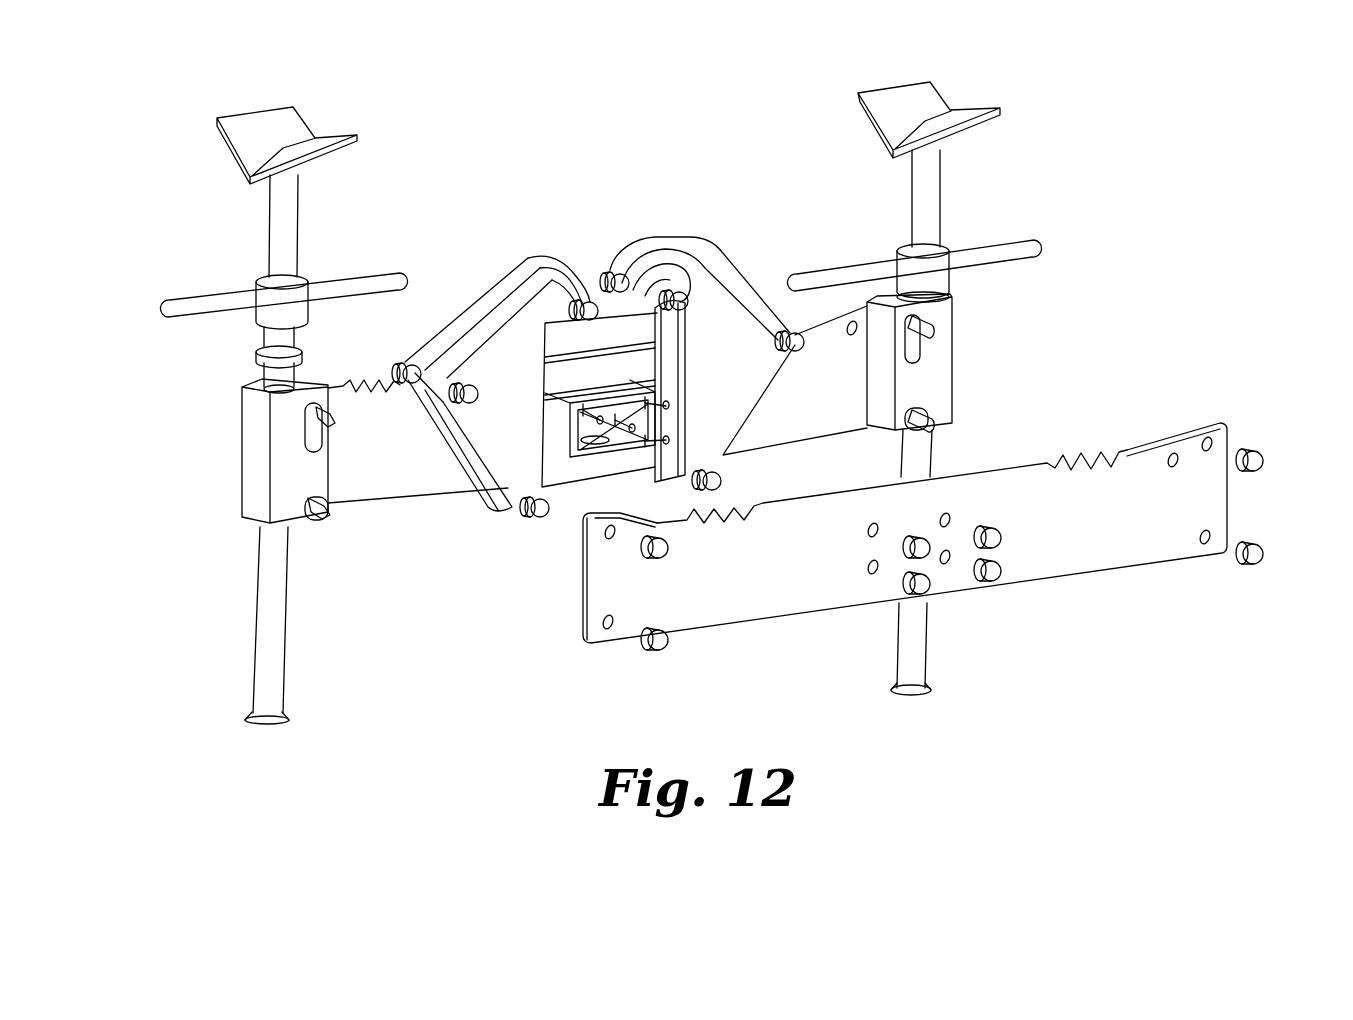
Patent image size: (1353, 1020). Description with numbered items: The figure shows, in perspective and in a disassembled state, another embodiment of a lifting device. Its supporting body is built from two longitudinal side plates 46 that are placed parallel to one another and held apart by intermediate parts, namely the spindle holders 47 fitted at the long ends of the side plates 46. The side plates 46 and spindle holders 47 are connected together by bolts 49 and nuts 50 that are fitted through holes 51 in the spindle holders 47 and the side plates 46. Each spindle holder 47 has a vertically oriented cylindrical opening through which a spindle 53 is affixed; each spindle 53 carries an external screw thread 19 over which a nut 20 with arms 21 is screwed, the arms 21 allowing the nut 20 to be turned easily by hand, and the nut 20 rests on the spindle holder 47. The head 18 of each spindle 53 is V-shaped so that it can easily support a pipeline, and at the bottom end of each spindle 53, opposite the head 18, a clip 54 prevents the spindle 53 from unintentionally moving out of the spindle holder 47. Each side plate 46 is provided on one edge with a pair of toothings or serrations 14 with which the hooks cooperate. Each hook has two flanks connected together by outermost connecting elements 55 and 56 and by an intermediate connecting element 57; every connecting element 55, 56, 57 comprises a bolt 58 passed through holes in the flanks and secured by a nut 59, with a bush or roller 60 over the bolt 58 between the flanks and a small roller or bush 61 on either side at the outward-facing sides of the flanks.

The toothings or serrations 14 is at (372, 362).
The V-shaped head 18 is at (277, 120).
The screw thread 19 is at (283, 203).
The nut 20 is at (305, 272).
The arms 21 is at (187, 309).
The longitudinal side plates 46 is at (836, 399).
The spindle holders 47 is at (255, 447).
The bolts 49 is at (322, 520).
The nuts 50 is at (640, 645).
The holes 51 is at (258, 520).
The spindle 53 is at (178, 198).
The clip 54 is at (254, 722).
The outermost connecting element 55 is at (555, 255).
The outermost connecting element 56 is at (499, 527).
The intermediate connecting element 57 is at (432, 326).
The bolt 58 is at (405, 363).
The nut 59 is at (513, 292).
The bush or roller 60 is at (473, 282).
The small roller or bush 61 is at (578, 300).